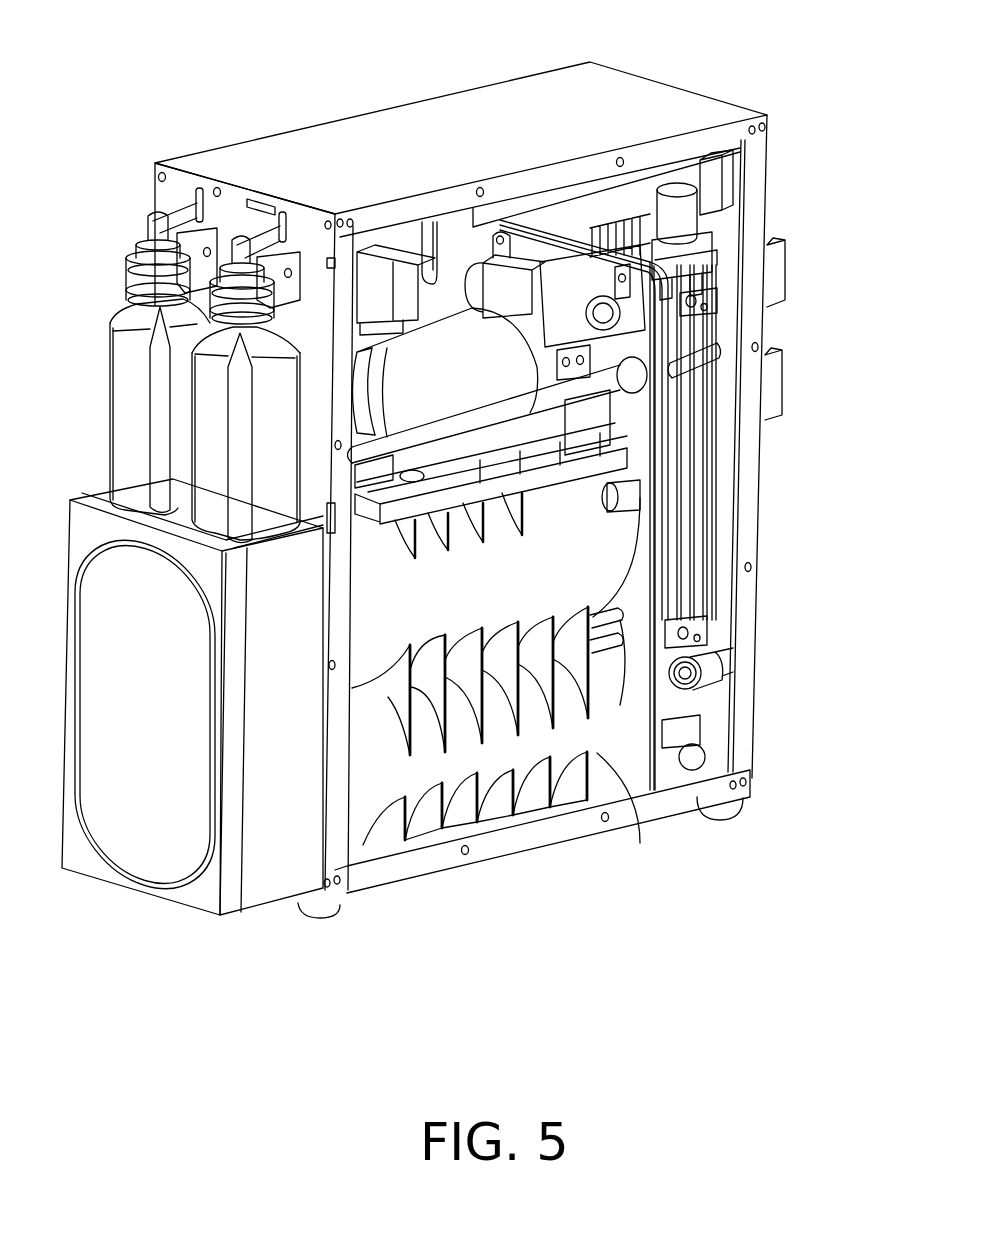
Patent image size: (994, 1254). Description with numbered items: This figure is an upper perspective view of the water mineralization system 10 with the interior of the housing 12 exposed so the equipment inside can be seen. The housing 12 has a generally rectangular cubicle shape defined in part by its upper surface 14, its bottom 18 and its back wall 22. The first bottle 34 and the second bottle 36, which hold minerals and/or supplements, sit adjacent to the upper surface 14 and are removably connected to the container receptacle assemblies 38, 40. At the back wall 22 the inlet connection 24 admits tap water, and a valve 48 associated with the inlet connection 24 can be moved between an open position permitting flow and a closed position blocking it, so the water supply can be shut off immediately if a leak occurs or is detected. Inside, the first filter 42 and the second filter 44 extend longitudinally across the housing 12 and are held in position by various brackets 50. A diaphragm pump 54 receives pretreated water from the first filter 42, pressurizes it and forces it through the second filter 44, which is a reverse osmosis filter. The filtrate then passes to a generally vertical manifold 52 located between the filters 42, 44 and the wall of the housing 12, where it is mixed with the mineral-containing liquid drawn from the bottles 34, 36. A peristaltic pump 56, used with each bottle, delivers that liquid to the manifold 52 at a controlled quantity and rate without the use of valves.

The water mineralization system 10 is at (860, 318).
The housing 12 is at (743, 542).
The upper surface 14 is at (523, 97).
The bottom 18 is at (757, 643).
The back wall 22 is at (767, 183).
The inlet connection 24 is at (787, 273).
The first bottle 34 is at (260, 447).
The second bottle 36 is at (138, 405).
The container receptacle assembly 38 is at (288, 250).
The container receptacle assembly 40 is at (213, 237).
The first filter 42 is at (597, 753).
The second filter 44 is at (559, 586).
The valve 48 is at (687, 215).
The brackets 50 is at (392, 698).
The manifold 52 is at (702, 473).
The diaphragm pump 54 is at (470, 381).
The peristaltic pump 56 is at (383, 265).